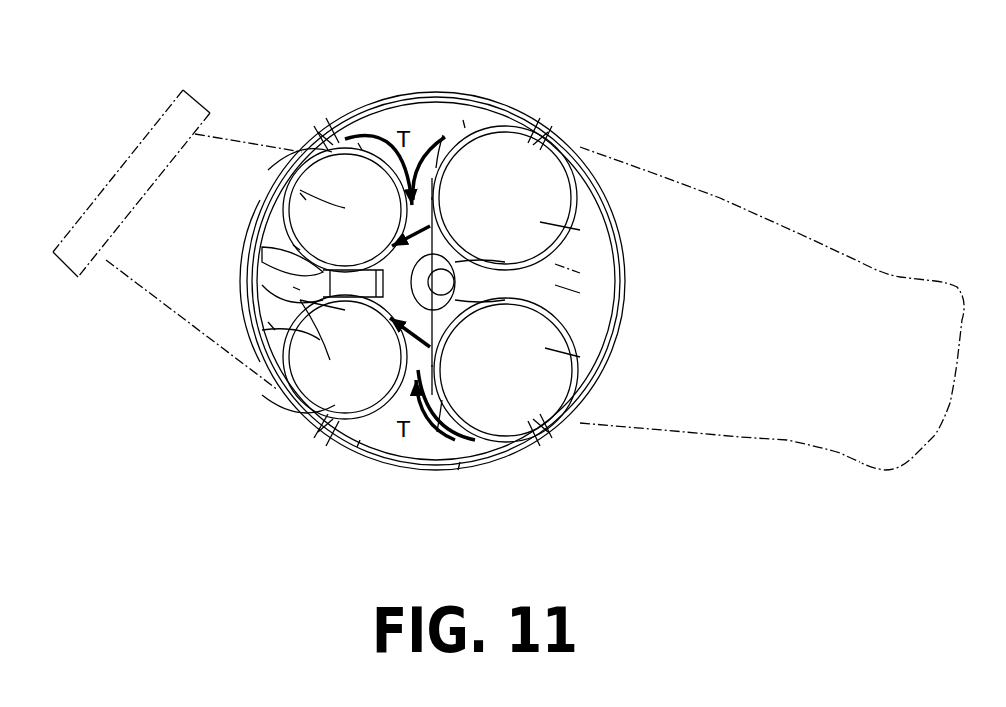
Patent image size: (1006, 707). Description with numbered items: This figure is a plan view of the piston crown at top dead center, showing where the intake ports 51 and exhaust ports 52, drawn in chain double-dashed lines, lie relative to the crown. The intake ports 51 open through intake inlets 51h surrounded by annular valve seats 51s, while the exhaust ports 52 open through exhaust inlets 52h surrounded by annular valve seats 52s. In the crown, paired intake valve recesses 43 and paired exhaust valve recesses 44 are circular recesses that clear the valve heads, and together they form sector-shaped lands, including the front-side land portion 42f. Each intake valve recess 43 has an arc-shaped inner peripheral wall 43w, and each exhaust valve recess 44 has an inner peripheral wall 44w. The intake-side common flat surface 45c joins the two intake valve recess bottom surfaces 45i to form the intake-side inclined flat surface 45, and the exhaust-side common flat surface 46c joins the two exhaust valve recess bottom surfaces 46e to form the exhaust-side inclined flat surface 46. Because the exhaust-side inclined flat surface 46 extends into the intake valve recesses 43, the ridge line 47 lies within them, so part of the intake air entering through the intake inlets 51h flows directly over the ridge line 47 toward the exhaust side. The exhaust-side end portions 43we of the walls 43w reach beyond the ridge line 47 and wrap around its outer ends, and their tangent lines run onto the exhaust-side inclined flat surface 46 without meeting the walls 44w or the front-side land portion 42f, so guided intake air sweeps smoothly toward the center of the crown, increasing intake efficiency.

The intake valve recess 43 is at (508, 130).
The inner peripheral wall of intake valve recess 43w is at (443, 140).
The exhaust-side end portion of inner peripheral wall 43we is at (434, 178).
The exhaust valve recess 44 is at (308, 172).
The inner peripheral wall of exhaust valve recess 44w is at (310, 186).
The intake-side inclined flat surface 45 is at (772, 263).
The intake valve recess bottom surface 45i is at (580, 230).
The intake-side common flat surface 45c is at (580, 273).
The exhaust-side inclined flat surface 46 is at (194, 168).
The exhaust valve recess bottom surface 46e is at (300, 193).
The exhaust-side common flat surface 46c is at (293, 245).
The ridge line 47 is at (433, 213).
The front-side land portion 42f is at (270, 323).
The intake port 51 is at (754, 230).
The intake inlet 51h is at (542, 150).
The valve seat 51s is at (463, 120).
The exhaust port 52 is at (193, 307).
The exhaust inlet 52h is at (333, 165).
The valve seat 52s is at (358, 143).